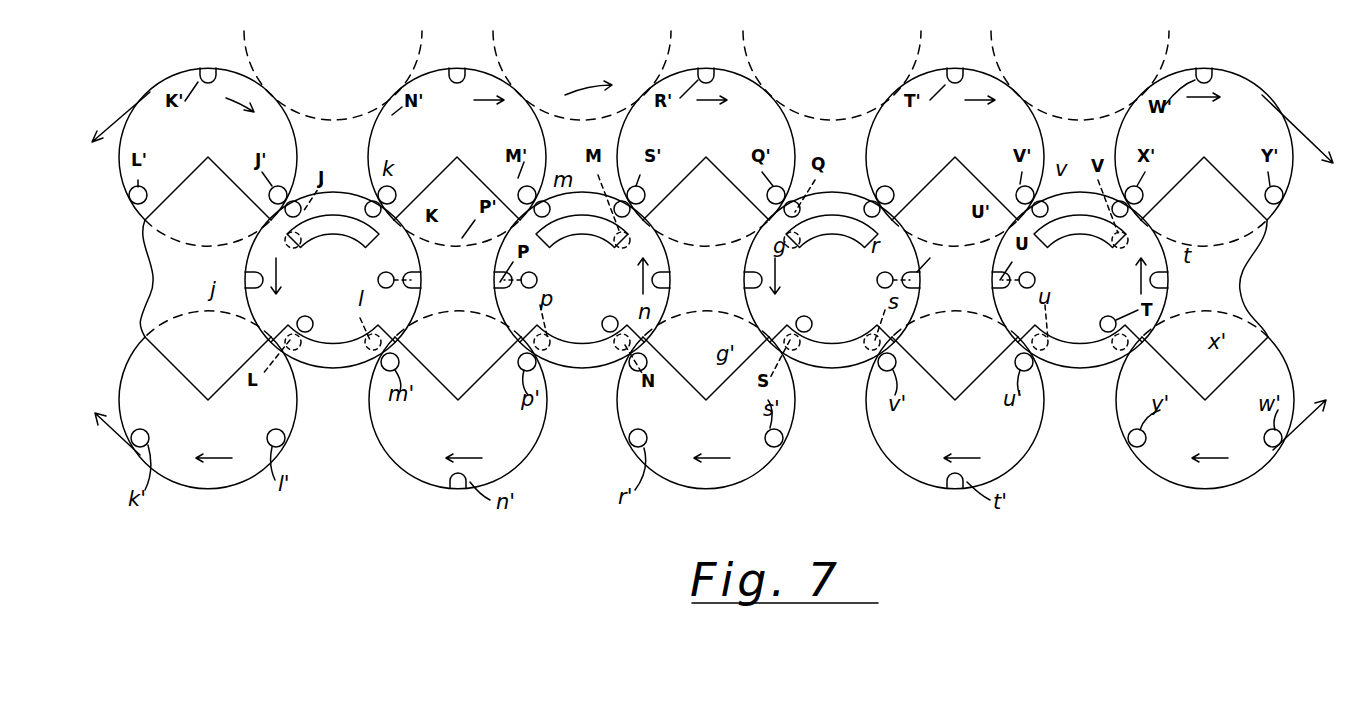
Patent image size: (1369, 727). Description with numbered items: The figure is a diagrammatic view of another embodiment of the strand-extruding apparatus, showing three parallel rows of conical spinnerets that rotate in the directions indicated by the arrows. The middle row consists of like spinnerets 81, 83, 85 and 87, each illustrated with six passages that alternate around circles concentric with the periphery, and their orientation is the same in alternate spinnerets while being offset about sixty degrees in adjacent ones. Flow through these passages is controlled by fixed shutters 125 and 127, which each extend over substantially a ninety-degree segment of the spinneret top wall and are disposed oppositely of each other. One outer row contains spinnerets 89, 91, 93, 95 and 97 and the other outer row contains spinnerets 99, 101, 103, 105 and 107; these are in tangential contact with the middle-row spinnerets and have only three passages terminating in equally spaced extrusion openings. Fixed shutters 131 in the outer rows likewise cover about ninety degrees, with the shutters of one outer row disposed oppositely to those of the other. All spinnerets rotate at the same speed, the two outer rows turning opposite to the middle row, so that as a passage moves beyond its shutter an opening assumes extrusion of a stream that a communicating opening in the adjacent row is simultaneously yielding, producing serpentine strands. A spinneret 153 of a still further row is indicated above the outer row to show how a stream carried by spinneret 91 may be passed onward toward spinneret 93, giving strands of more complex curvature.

The spinneret 81 is at (321, 316).
The spinneret 83 is at (570, 316).
The spinneret 85 is at (820, 316).
The spinneret 87 is at (1068, 316).
The spinneret 89 is at (195, 151).
The spinneret 91 is at (444, 151).
The spinneret 93 is at (694, 151).
The spinneret 95 is at (943, 151).
The spinneret 97 is at (1192, 151).
The spinneret 99 is at (196, 436).
The spinneret 101 is at (441, 436).
The spinneret 103 is at (689, 436).
The spinneret 105 is at (938, 436).
The spinneret 107 is at (1188, 436).
The fixed shutter 125 is at (1080, 245).
The fixed shutter 127 is at (1080, 373).
The fixed shutter 131 is at (191, 201).
The spinneret 153 is at (706, 75).